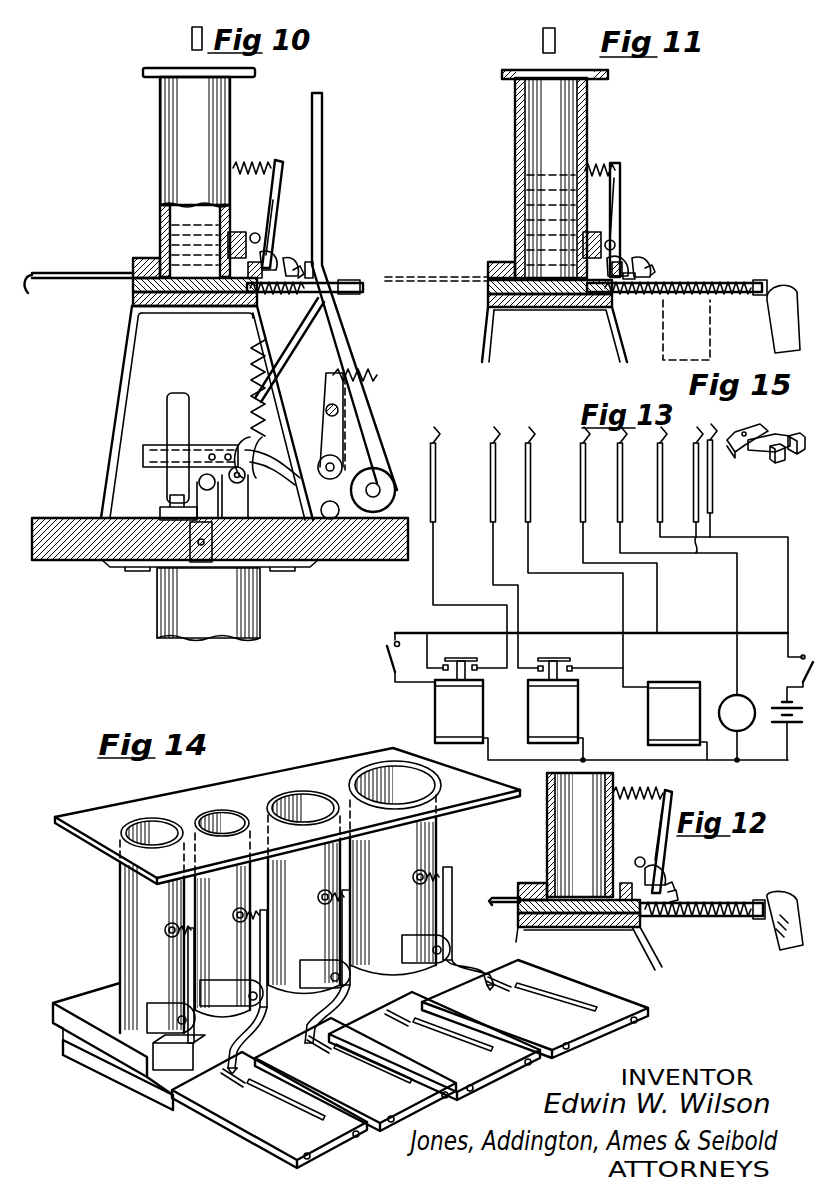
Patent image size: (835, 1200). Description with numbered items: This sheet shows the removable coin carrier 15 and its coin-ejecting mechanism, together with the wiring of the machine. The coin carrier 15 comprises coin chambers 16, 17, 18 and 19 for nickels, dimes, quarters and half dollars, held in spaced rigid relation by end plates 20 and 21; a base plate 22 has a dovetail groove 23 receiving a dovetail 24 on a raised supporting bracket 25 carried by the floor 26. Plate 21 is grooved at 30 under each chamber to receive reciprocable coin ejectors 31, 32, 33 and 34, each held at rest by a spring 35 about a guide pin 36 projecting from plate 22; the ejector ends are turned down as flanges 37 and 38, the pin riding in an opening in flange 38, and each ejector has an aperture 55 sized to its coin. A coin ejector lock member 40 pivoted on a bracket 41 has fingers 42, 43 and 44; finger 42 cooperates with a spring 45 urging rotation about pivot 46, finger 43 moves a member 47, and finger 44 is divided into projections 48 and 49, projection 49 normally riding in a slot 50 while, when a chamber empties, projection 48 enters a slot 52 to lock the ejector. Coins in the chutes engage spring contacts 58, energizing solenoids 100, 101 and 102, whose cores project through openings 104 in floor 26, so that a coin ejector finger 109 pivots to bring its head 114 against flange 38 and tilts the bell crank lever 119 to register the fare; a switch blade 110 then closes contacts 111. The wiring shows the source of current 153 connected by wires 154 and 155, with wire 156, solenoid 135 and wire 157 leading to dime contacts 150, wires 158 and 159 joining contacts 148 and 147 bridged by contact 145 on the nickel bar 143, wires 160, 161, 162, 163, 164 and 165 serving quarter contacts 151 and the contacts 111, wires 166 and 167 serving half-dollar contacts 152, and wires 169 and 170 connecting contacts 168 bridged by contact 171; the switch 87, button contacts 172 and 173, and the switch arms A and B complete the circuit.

In FIG. 10, the coin carrier 15 is at (138, 142).
In FIG. 11, the coin carrier 15 is at (505, 145).
In FIG. 12, the coin carrier 15 is at (580, 835).
In FIG. 14, the coin carrier 15 is at (318, 762).
In FIG. 14, the coin chamber 16 is at (152, 947).
In FIG. 14, the coin chamber 17 is at (222, 939).
In FIG. 14, the coin chamber 18 is at (304, 917).
In FIG. 14, the coin chamber 19 is at (393, 896).
In FIG. 10, the end plate 20 is at (150, 77).
In FIG. 11, the end plate 20 is at (504, 79).
In FIG. 14, the end plate 20 is at (63, 823).
In FIG. 10, the end plate 21 is at (138, 258).
In FIG. 11, the end plate 21 is at (488, 270).
In FIG. 14, the end plate 21 is at (53, 1003).
In FIG. 10, the base plate 22 is at (132, 290).
In FIG. 11, the base plate 22 is at (488, 300).
In FIG. 14, the base plate 22 is at (60, 1034).
In FIG. 10, the dovetail groove 23 is at (135, 302).
In FIG. 14, the dovetail groove 23 is at (138, 1090).
In FIG. 10, the dovetail 24 is at (135, 318).
In FIG. 11, the dovetail 24 is at (485, 322).
In FIG. 10, the supporting bracket 25 is at (124, 370).
In FIG. 11, the supporting bracket 25 is at (482, 352).
In FIG. 10, the floor 26 is at (40, 518).
In FIG. 10, the groove 30 is at (146, 258).
In FIG. 11, the groove 30 is at (492, 262).
In FIG. 12, the groove 30 is at (530, 883).
In FIG. 14, the groove 30 is at (176, 1052).
In FIG. 14, the coin ejector 31 is at (330, 1138).
In FIG. 14, the coin ejector 32 is at (425, 1093).
In FIG. 14, the coin ejector 33 is at (490, 1072).
In FIG. 14, the coin ejector 34 is at (592, 1030).
In FIG. 10, the spring 35 is at (292, 293).
In FIG. 11, the spring 35 is at (740, 293).
In FIG. 12, the spring 35 is at (702, 917).
In FIG. 10, the guide pin 36 is at (352, 283).
In FIG. 11, the guide pin 36 is at (645, 293).
In FIG. 12, the guide pin 36 is at (735, 917).
In FIG. 14, the guide pin 36 is at (312, 1162).
In FIG. 10, the flange 37 is at (36, 296).
In FIG. 11, the flange 37 is at (486, 285).
In FIG. 10, the flange 38 is at (333, 280).
In FIG. 11, the flange 38 is at (767, 283).
In FIG. 12, the flange 38 is at (750, 898).
In FIG. 10, the coin ejector lock member 40 is at (275, 196).
In FIG. 11, the coin ejector lock member 40 is at (622, 212).
In FIG. 12, the coin ejector lock member 40 is at (655, 818).
In FIG. 14, the coin ejector lock member 40 is at (185, 962).
In FIG. 10, the bracket 41 is at (240, 230).
In FIG. 11, the bracket 41 is at (596, 230).
In FIG. 14, the bracket 41 is at (410, 950).
In FIG. 10, the finger 42 is at (283, 163).
In FIG. 11, the finger 42 is at (621, 168).
In FIG. 12, the finger 42 is at (662, 841).
In FIG. 14, the finger 42 is at (452, 880).
In FIG. 10, the finger 43 is at (278, 250).
In FIG. 11, the finger 43 is at (628, 258).
In FIG. 12, the finger 43 is at (662, 868).
In FIG. 10, the finger 44 is at (298, 260).
In FIG. 11, the finger 44 is at (652, 262).
In FIG. 14, the finger 44 is at (472, 945).
In FIG. 10, the spring 45 is at (260, 165).
In FIG. 11, the spring 45 is at (606, 167).
In FIG. 12, the spring 45 is at (645, 793).
In FIG. 14, the spring 45 is at (413, 877).
In FIG. 10, the pivot 46 is at (262, 236).
In FIG. 11, the pivot 46 is at (616, 244).
In FIG. 12, the pivot 46 is at (640, 856).
In FIG. 14, the pivot 46 is at (175, 1023).
In FIG. 10, the member 47 is at (262, 268).
In FIG. 11, the member 47 is at (618, 267).
In FIG. 12, the member 47 is at (666, 878).
In FIG. 10, the projection 48 is at (305, 270).
In FIG. 11, the projection 48 is at (655, 272).
In FIG. 12, the projection 48 is at (679, 895).
In FIG. 14, the projection 48 is at (237, 1070).
In FIG. 10, the projection 49 is at (310, 262).
In FIG. 11, the projection 49 is at (629, 293).
In FIG. 14, the projection 49 is at (225, 1068).
In FIG. 14, the slot 50 is at (298, 1106).
In FIG. 12, the slot 52 is at (676, 886).
In FIG. 14, the slot 52 is at (232, 1080).
In FIG. 10, the aperture 55 is at (100, 273).
In FIG. 13, the spring contacts 58 is at (578, 428).
In FIG. 13, the switch 87 is at (783, 681).
In FIG. 13, the solenoid 100 is at (677, 721).
In FIG. 13, the solenoid 101 is at (556, 721).
In FIG. 13, the solenoid 102 is at (611, 720).
In FIG. 10, the opening 104 is at (175, 570).
In FIG. 10, the coin ejector finger 109 is at (350, 352).
In FIG. 11, the coin ejector finger 109 is at (777, 345).
In FIG. 12, the coin ejector finger 109 is at (785, 945).
In FIG. 13, the switch blade 110 is at (554, 658).
In FIG. 13, the contacts 111 is at (573, 666).
In FIG. 12, the head 114 is at (776, 897).
In FIG. 10, the bell crank lever 119 is at (328, 435).
In FIG. 13, the solenoid 135 is at (737, 728).
In FIG. 15, the bar 143 is at (757, 424).
In FIG. 15, the contact 145 is at (780, 436).
In FIG. 13, the contact 147 is at (712, 479).
In FIG. 15, the contact 147 is at (783, 462).
In FIG. 13, the contact 148 is at (710, 505).
In FIG. 15, the contact 148 is at (795, 450).
In FIG. 13, the contacts 150 is at (660, 490).
In FIG. 13, the contacts 151 is at (583, 490).
In FIG. 13, the contacts 152 is at (493, 498).
In FIG. 13, the source of current 153 is at (774, 722).
In FIG. 13, the wire 154 is at (760, 762).
In FIG. 13, the wire 155 is at (786, 655).
In FIG. 13, the wire 156 is at (702, 752).
In FIG. 13, the wire 157 is at (736, 665).
In FIG. 13, the wire 158 is at (696, 556).
In FIG. 13, the wire 159 is at (712, 532).
In FIG. 13, the wire 160 is at (700, 633).
In FIG. 13, the wire 161 is at (655, 595).
In FIG. 13, the wire 162 is at (622, 608).
In FIG. 13, the wire 163 is at (707, 760).
In FIG. 13, the wire 164 is at (603, 670).
In FIG. 13, the wire 165 is at (520, 604).
In FIG. 13, the wire 166 is at (467, 605).
In FIG. 13, the wire 167 is at (585, 758).
In FIG. 13, the contact 168 is at (478, 665).
In FIG. 13, the wire 169 is at (495, 668).
In FIG. 13, the wire 170 is at (413, 633).
In FIG. 13, the contact 171 is at (460, 658).
In FIG. 13, the contact 172 is at (392, 640).
In FIG. 13, the contact 173 is at (392, 678).
In FIG. 13, the switch arm A is at (797, 693).
In FIG. 13, the switch arm B is at (385, 655).